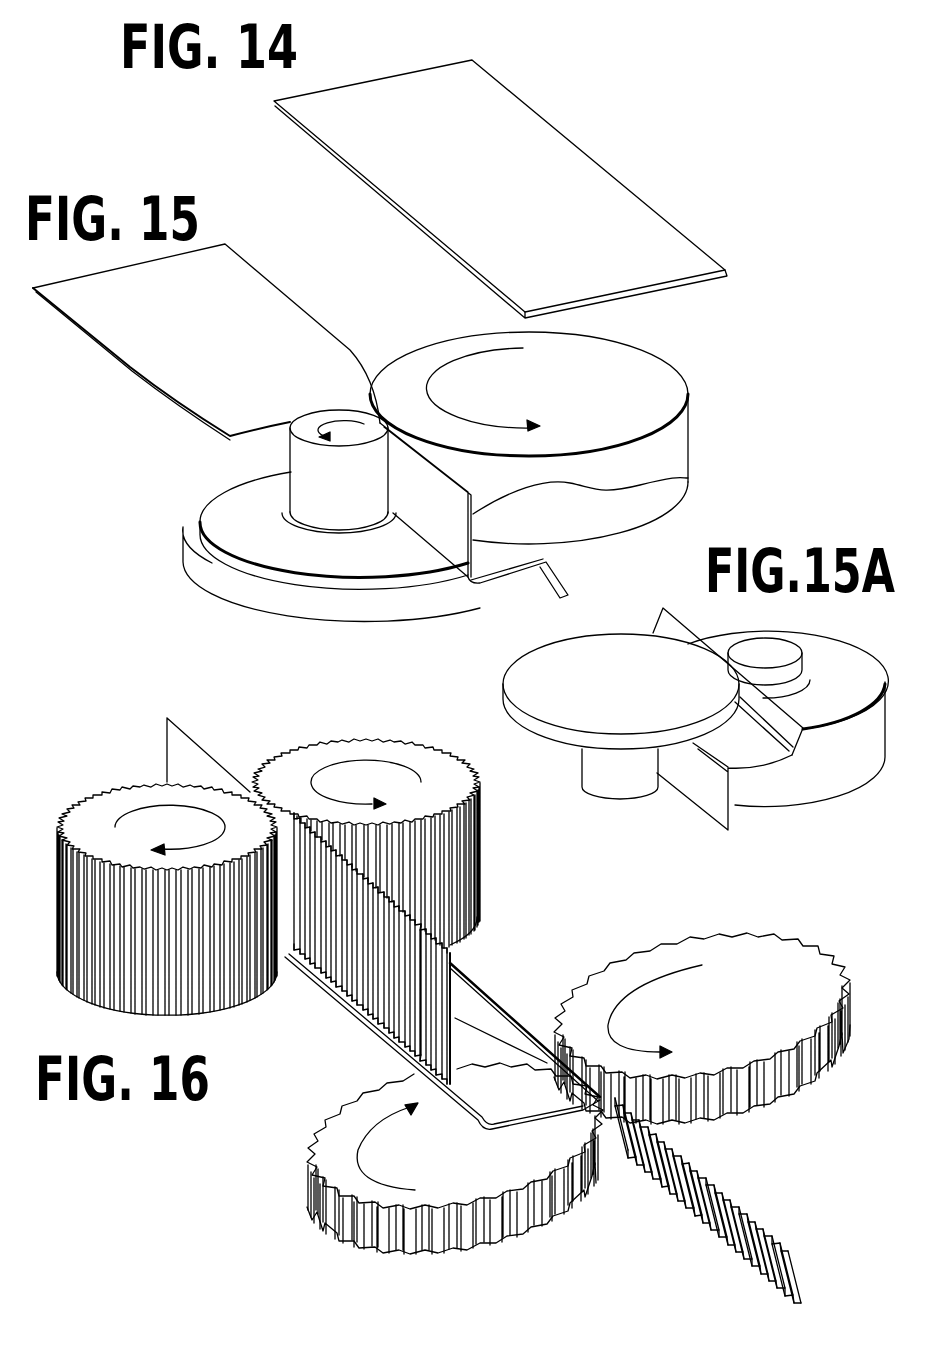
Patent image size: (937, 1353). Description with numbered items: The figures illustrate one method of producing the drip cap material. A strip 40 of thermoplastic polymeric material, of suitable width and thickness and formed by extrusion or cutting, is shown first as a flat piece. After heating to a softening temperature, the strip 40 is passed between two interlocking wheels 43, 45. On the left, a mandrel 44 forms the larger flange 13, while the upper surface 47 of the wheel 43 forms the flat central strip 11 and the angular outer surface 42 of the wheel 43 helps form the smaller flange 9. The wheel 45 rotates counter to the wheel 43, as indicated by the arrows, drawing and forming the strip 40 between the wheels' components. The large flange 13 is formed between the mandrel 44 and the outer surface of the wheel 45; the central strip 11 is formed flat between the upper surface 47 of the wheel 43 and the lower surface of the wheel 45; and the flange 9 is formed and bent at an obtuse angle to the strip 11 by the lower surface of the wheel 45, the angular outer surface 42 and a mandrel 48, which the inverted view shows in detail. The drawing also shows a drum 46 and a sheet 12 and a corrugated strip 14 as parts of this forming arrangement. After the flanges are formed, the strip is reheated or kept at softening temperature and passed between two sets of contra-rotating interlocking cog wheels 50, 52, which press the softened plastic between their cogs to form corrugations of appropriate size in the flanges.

In FIG. 14, the strip 40 is at (570, 152).
In FIG. 15, the strip 40 is at (125, 368).
In FIG. 15, the drum 46 is at (678, 372).
In FIG. 15A, the drum 46 is at (878, 672).
In FIG. 15, the wheel 45 is at (697, 420).
In FIG. 15, the larger flange 13 is at (680, 482).
In FIG. 15, the mandrel 44 is at (298, 458).
In FIG. 15A, the mandrel 44 is at (585, 770).
In FIG. 15, the wheel 43 is at (186, 507).
In FIG. 15, the angular outer surface 42 is at (193, 553).
In FIG. 15A, the angular outer surface 42 is at (520, 685).
In FIG. 15, the upper surface 47 is at (250, 543).
In FIG. 15, the smaller flange 9 is at (563, 575).
In FIG. 15, the flat central strip 11 is at (508, 563).
In FIG. 15A, the flat central strip 11 is at (728, 719).
In FIG. 16, the flat central strip 11 is at (527, 1100).
In FIG. 15A, the mandrel 48 is at (777, 650).
In FIG. 16, the interlocking cog wheels 50 is at (60, 898).
In FIG. 16, the corrugated sheet 12 is at (452, 957).
In FIG. 16, the interlocking cog wheels 52 is at (818, 1083).
In FIG. 16, the corrugated strip 14 is at (797, 1277).